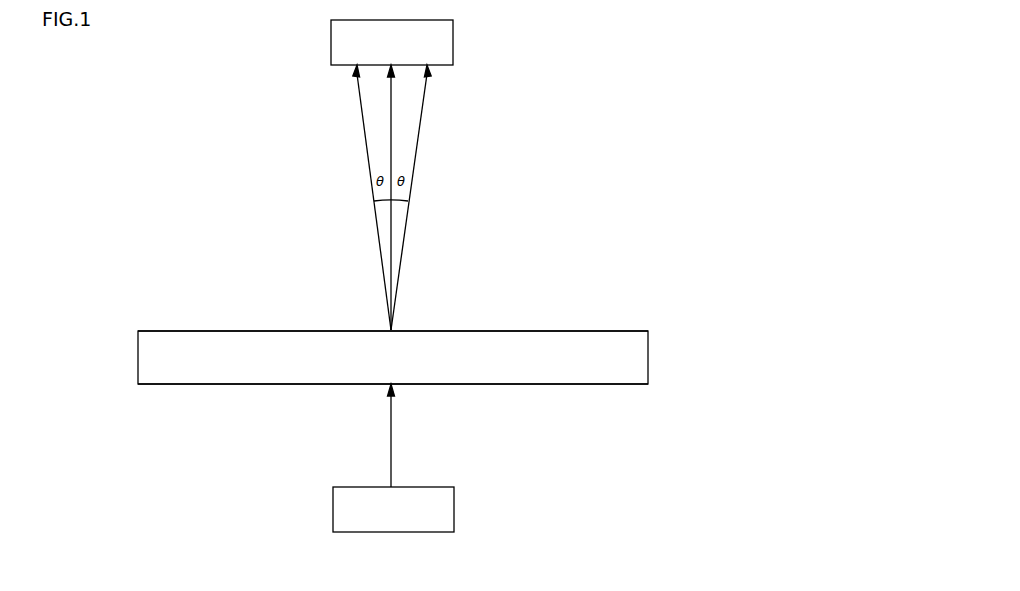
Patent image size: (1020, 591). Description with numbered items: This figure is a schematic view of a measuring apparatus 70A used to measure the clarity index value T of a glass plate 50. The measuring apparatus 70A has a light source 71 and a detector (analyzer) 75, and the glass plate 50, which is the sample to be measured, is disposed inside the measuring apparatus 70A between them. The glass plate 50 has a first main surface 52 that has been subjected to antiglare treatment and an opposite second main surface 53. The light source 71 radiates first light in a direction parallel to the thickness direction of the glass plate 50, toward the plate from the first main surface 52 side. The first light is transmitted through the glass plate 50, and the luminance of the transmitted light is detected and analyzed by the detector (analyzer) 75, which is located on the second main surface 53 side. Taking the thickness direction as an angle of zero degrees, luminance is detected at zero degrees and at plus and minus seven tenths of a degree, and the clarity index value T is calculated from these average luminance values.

The measuring apparatus 70A is at (611, 72).
The detector (analyzer) 75 is at (440, 40).
The glass plate 50 is at (635, 352).
The second main surface 53 is at (606, 331).
The first main surface 52 is at (623, 384).
The light source 71 is at (440, 512).